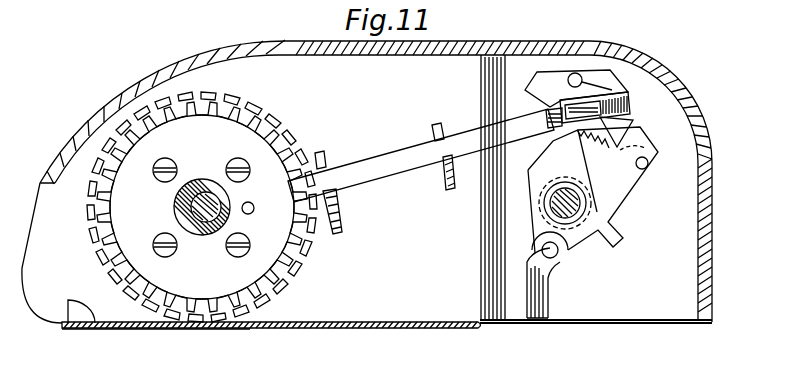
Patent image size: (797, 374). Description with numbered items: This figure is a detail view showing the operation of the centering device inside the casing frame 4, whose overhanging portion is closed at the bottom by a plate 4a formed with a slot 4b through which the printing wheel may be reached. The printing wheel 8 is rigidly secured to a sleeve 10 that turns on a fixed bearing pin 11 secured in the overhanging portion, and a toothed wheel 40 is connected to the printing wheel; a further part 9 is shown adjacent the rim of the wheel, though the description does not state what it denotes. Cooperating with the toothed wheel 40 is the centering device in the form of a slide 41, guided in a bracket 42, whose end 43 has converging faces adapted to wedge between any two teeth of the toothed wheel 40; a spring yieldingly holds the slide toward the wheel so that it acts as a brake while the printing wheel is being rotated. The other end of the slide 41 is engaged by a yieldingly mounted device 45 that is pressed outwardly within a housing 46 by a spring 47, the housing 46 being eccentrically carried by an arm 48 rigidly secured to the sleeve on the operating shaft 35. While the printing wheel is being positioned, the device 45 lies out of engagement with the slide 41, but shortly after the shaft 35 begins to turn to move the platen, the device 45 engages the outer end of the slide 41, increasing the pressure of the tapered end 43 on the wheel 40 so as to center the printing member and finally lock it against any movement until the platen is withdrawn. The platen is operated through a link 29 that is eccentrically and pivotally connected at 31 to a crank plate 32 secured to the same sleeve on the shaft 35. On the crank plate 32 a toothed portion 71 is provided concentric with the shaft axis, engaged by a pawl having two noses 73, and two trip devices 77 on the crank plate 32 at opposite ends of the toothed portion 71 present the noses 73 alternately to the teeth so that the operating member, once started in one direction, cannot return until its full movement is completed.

The frame 4 is at (520, 42).
The plate 4a is at (331, 329).
The slot 4b is at (222, 329).
The printing wheel 8 is at (298, 277).
The ring segment 9 is at (306, 252).
The sleeve 10 is at (211, 230).
The bearing pin 11 is at (178, 208).
The link 29 is at (540, 305).
The pivotal connection 31 is at (556, 252).
The crank plate 32 is at (605, 200).
The operating shaft 35 is at (546, 212).
The toothed wheel 40 is at (264, 130).
The slide 41 is at (373, 162).
The bracket 42 is at (326, 160).
The end of slide 43 is at (300, 160).
The yieldingly mounted device 45 is at (602, 93).
The housing 46 is at (630, 89).
The spring 47 is at (640, 94).
The arm 48 is at (584, 190).
The toothed portion 71 is at (632, 118).
The noses 73 is at (612, 145).
The trip devices 77 is at (548, 92).